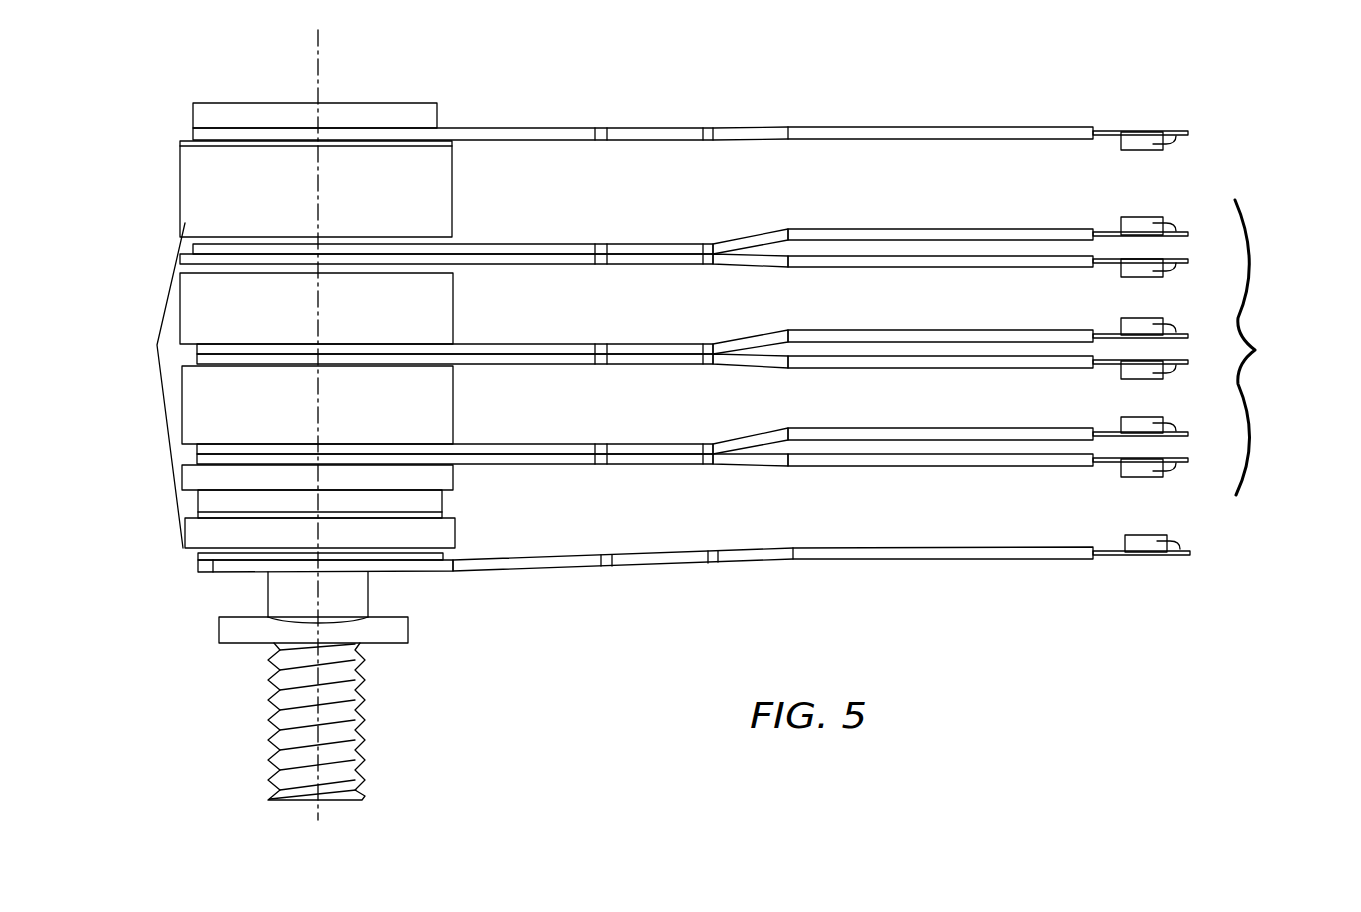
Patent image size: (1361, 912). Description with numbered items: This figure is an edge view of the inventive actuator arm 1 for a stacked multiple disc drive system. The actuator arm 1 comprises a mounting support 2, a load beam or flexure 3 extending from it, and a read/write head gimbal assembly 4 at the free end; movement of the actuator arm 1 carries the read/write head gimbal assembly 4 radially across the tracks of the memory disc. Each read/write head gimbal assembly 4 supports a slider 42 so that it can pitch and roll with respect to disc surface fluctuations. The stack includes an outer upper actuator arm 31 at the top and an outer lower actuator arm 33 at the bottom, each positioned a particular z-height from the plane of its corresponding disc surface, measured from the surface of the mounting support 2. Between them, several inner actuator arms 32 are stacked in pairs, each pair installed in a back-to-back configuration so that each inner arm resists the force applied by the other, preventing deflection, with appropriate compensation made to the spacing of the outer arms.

The actuator arm 1 is at (488, 422).
The mounting support 2 is at (658, 243).
The load beam or flexure 3 is at (962, 229).
The read/write head gimbal assembly 4 is at (1158, 249).
The outer upper actuator arm 31 is at (1180, 103).
The inner actuator arms 32 is at (1289, 347).
The outer lower actuator arm 33 is at (1181, 581).
The slider 42 is at (1134, 225).